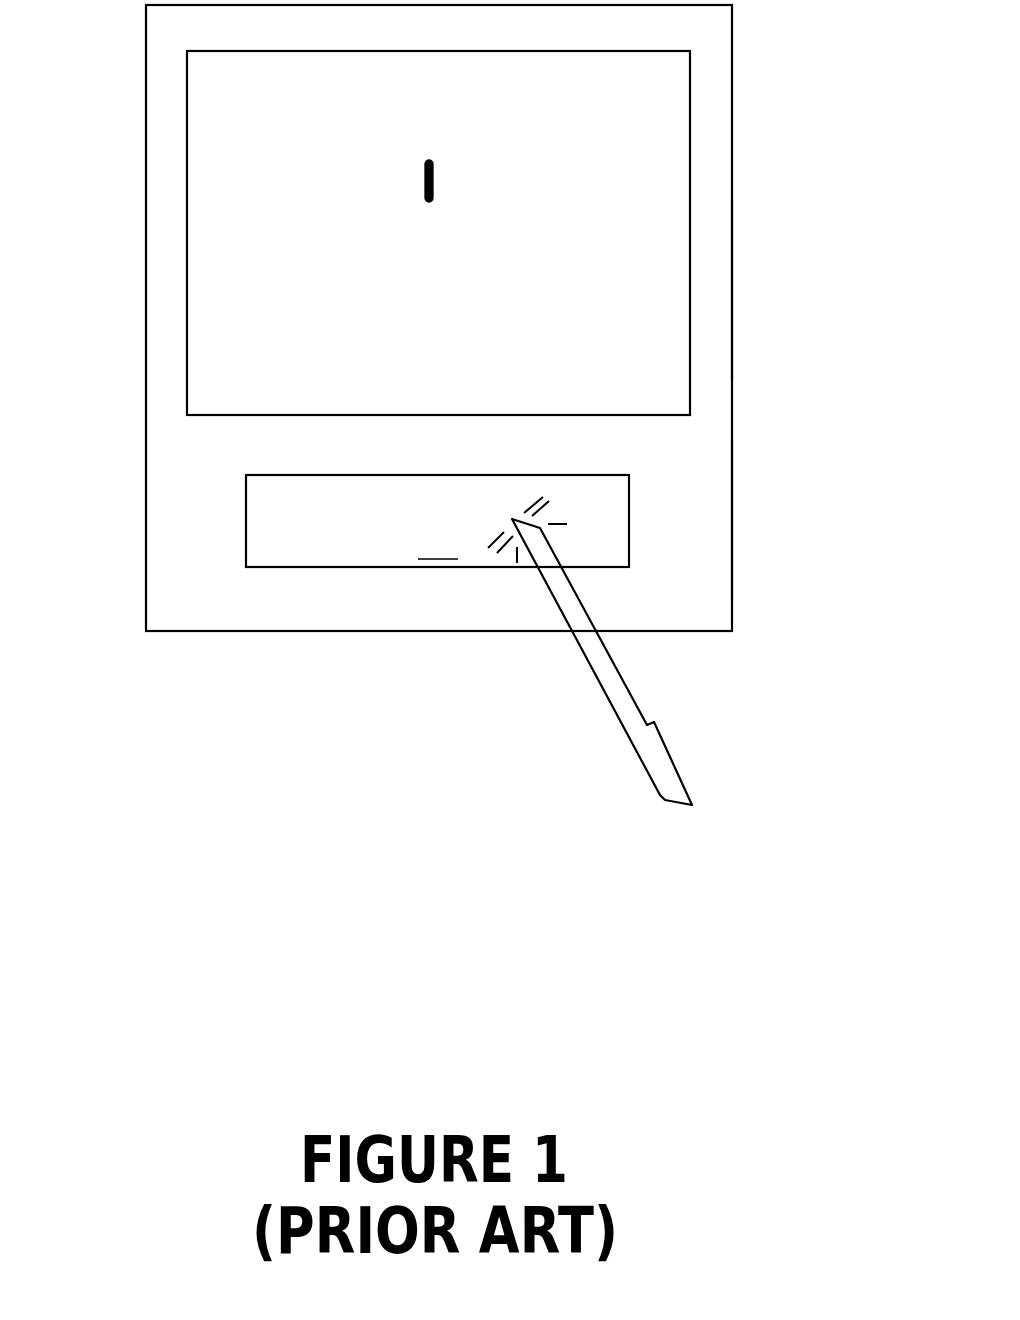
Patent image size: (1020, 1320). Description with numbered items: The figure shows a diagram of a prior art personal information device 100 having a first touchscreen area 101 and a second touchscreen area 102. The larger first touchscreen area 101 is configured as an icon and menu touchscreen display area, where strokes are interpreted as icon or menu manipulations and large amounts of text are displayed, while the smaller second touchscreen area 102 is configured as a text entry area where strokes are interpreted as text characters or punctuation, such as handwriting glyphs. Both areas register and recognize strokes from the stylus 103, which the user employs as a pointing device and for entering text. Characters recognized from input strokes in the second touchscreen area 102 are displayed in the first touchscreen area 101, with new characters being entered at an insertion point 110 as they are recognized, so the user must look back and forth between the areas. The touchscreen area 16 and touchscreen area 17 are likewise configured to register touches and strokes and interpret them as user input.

The personal information device 100 is at (146, 60).
The first touchscreen area 101 is at (187, 233).
The second touchscreen area 102 is at (246, 519).
The stylus 103 is at (674, 759).
The insertion point 110 is at (440, 180).
The touchscreen area 16 is at (656, 520).
The touchscreen area 17 is at (707, 290).